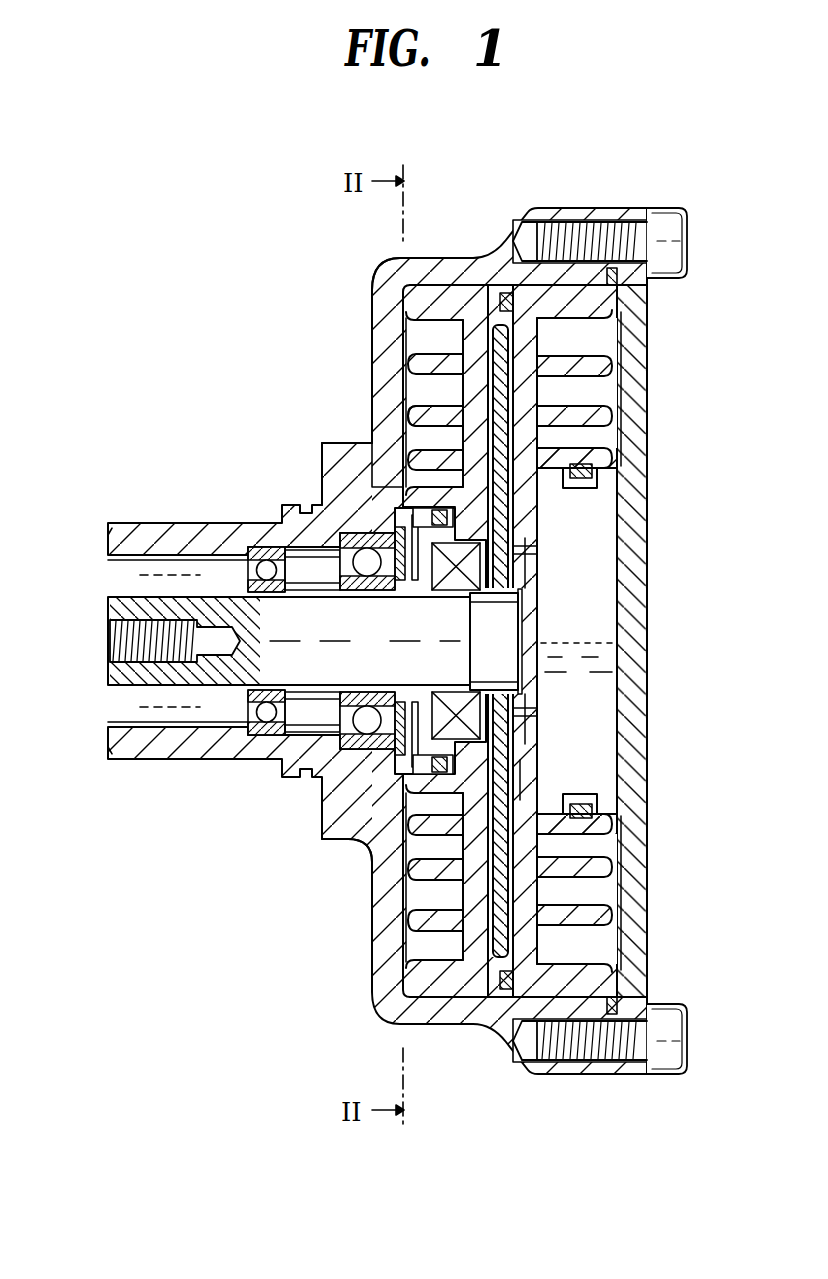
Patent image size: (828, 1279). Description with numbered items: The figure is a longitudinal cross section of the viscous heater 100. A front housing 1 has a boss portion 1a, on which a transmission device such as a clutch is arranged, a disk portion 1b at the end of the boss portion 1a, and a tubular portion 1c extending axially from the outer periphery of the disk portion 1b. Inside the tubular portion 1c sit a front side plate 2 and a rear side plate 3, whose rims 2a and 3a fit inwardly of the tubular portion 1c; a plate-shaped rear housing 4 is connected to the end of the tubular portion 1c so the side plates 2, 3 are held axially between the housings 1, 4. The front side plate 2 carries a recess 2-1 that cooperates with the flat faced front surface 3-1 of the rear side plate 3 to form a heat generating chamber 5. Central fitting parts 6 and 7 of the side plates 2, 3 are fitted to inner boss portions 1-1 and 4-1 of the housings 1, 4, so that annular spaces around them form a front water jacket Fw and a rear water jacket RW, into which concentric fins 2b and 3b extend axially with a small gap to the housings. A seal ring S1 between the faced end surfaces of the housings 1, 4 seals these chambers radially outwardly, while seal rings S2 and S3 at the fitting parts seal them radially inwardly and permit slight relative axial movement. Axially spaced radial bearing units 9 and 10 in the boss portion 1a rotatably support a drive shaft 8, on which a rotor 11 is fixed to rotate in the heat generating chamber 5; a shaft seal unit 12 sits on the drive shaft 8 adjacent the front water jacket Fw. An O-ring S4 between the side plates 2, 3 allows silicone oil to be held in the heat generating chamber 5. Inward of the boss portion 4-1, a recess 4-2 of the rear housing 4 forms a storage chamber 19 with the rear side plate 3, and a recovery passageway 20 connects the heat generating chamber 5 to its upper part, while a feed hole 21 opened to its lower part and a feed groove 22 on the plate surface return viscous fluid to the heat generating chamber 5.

The viscous heater 100 is at (445, 230).
The front housing 1 is at (377, 245).
The boss portion 1a is at (160, 524).
The disk portion 1b is at (381, 410).
The tubular portion 1c is at (492, 260).
The front side plate 2 is at (466, 343).
The rim 2a is at (383, 300).
The fins 2b is at (418, 362).
The recess 2-1 is at (484, 893).
The front water jacket Fw is at (420, 388).
The rear side plate 3 is at (608, 343).
The rim 3a is at (610, 284).
The fins 3b is at (606, 369).
The flat faced front surface 3-1 is at (508, 950).
The rear housing 4 is at (644, 389).
The inner boss portion 4-1 is at (600, 496).
The recess 4-2 is at (604, 628).
The rear water jacket RW is at (640, 414).
The heat generating chamber 5 is at (518, 509).
The fitting part 6 is at (434, 508).
The fitting part 7 is at (596, 472).
The drive shaft 8 is at (108, 668).
The radial bearing unit 9 is at (272, 588).
The radial bearing unit 10 is at (367, 588).
The rotor 11 is at (522, 575).
The shaft seal unit 12 is at (449, 583).
The storage chamber 19 is at (608, 646).
The recovery passageway 20 is at (531, 541).
The feed hole 21 is at (525, 712).
The feed groove 22 is at (514, 781).
The inner boss portion 1-1 is at (332, 842).
The seal ring S1 is at (618, 1007).
The seal ring S2 is at (434, 770).
The seal ring S3 is at (594, 810).
The O-ring S4 is at (489, 985).